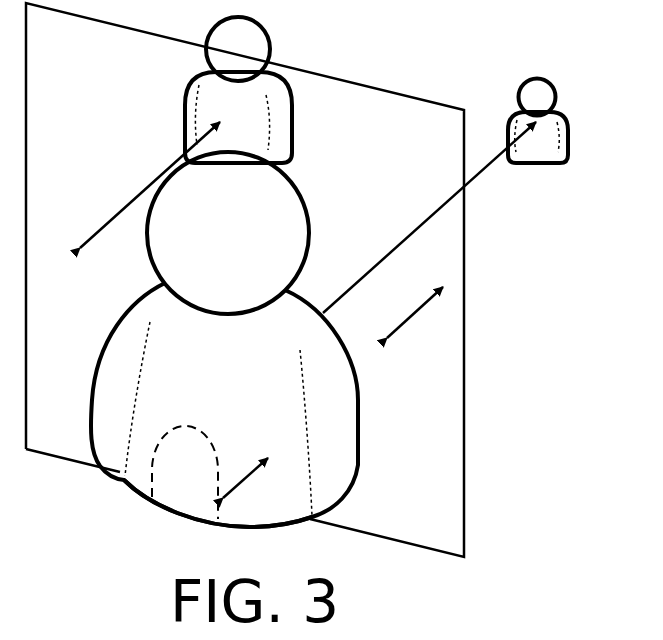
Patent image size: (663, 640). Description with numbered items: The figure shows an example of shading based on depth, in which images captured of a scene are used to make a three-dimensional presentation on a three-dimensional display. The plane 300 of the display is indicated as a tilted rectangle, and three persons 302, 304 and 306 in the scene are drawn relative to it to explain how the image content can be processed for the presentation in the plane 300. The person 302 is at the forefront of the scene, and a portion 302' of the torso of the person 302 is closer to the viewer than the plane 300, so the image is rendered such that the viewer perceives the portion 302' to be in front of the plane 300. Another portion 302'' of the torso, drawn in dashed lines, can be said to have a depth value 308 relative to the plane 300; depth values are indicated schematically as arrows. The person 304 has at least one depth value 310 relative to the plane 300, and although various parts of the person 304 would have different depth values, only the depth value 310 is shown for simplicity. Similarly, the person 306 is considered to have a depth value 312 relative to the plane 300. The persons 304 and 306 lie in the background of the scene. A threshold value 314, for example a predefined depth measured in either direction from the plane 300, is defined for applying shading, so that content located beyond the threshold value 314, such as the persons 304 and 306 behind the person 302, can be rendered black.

The plane of the 3D display 300 is at (434, 522).
The person 302 is at (260, 339).
The portion of the torso 302' is at (251, 523).
The portion of the torso 302'' is at (185, 472).
The person 304 is at (185, 113).
The person 306 is at (522, 165).
The depth value 308 is at (241, 478).
The depth value 310 is at (157, 179).
The depth value 312 is at (413, 230).
The threshold value 314 is at (412, 317).